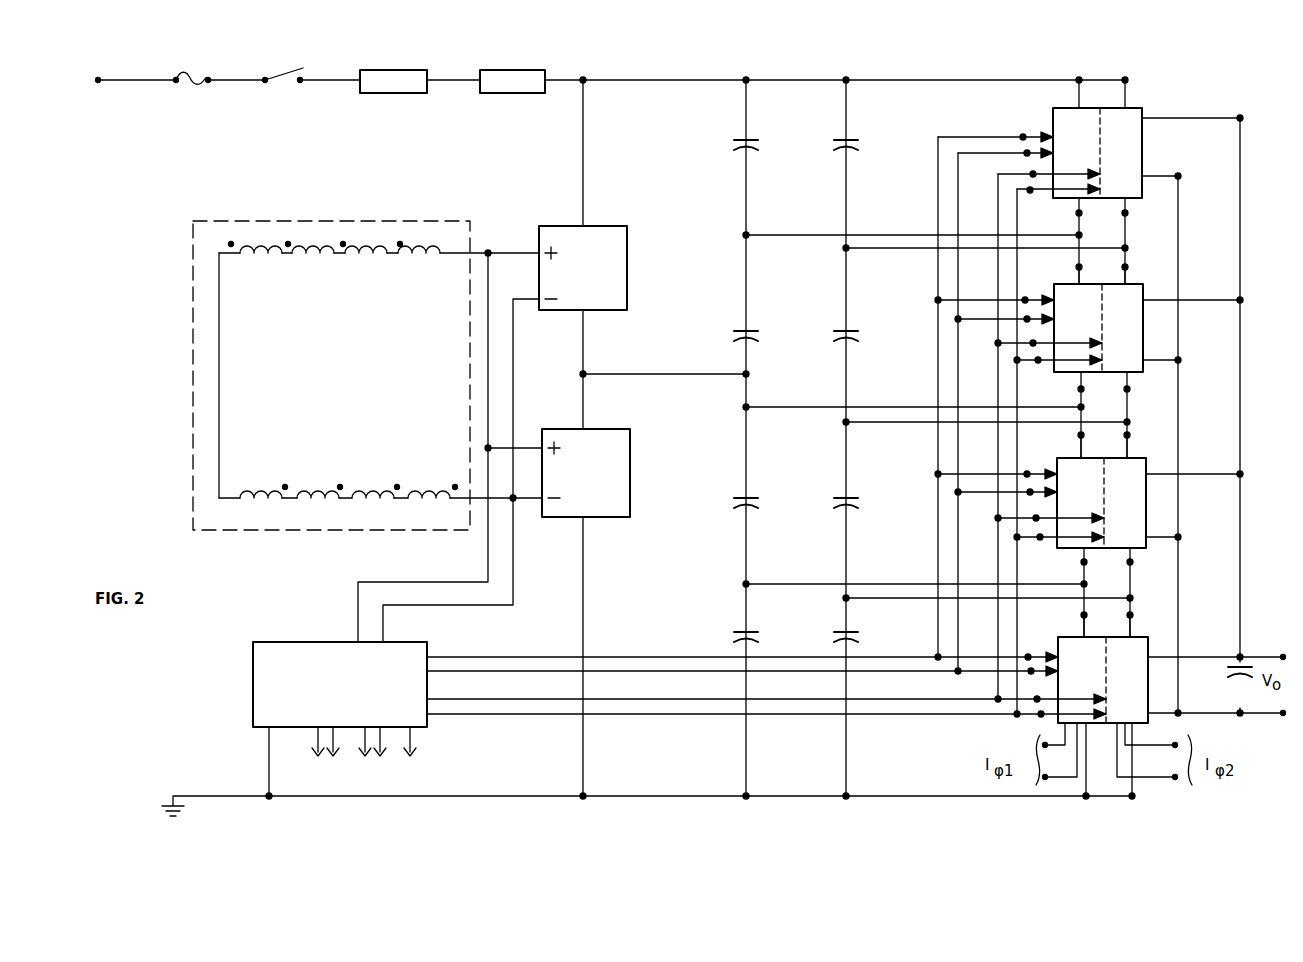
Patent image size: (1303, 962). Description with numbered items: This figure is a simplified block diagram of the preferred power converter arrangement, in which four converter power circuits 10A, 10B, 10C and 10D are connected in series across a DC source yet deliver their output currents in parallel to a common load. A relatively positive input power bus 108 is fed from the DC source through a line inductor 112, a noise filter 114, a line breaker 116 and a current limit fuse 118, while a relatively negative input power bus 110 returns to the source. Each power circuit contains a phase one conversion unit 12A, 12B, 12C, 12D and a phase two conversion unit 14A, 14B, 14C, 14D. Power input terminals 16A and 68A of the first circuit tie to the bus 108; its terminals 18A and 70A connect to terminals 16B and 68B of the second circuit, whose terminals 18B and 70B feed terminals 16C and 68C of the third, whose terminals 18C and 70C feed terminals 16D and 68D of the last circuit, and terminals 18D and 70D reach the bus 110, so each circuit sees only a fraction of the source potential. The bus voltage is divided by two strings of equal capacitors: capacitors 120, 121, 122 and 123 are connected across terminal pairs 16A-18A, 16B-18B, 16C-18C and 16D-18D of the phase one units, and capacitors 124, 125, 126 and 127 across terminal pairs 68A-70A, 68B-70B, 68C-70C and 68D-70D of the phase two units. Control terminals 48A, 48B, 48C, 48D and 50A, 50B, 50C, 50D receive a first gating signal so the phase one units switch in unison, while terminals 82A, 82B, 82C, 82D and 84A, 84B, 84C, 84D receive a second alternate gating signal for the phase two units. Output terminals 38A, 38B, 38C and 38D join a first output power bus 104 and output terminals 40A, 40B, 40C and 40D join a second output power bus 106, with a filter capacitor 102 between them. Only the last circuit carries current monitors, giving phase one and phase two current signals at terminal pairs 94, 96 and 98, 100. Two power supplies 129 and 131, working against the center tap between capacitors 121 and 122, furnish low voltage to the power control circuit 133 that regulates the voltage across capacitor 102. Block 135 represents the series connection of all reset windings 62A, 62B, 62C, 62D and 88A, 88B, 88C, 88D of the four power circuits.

The input power bus 108 is at (921, 80).
The input power bus 110 is at (685, 796).
The line inductor 112 is at (524, 72).
The noise filter 114 is at (404, 72).
The line breaker 116 is at (284, 74).
The current limit fuse 118 is at (198, 74).
The capacitor 120 is at (728, 142).
The capacitor 121 is at (726, 330).
The capacitor 122 is at (734, 498).
The capacitor 123 is at (730, 636).
The capacitor 124 is at (828, 142).
The capacitor 125 is at (834, 332).
The capacitor 126 is at (846, 502).
The capacitor 127 is at (838, 638).
The power supply 129 is at (627, 230).
The power supply 131 is at (630, 440).
The power control circuit 133 is at (334, 638).
The reset winding block 135 is at (355, 218).
The reset winding 62A is at (425, 258).
The reset winding 62B is at (368, 258).
The reset winding 62C is at (313, 258).
The reset winding 62D is at (256, 258).
The reset winding 88A is at (260, 484).
The reset winding 88B is at (314, 484).
The reset winding 88C is at (373, 484).
The reset winding 88D is at (428, 484).
The converter power circuit 10A is at (1076, 142).
The converter power circuit 10B is at (1089, 310).
The converter power circuit 10C is at (1090, 485).
The converter power circuit 10D is at (1091, 660).
The phase one conversion unit 12A is at (1074, 129).
The phase one conversion unit 12B is at (1074, 305).
The phase one conversion unit 12C is at (1078, 479).
The phase one conversion unit 12D is at (1079, 657).
The phase two conversion unit 14A is at (1120, 129).
The phase two conversion unit 14B is at (1121, 305).
The phase two conversion unit 14C is at (1124, 479).
The phase two conversion unit 14D is at (1125, 657).
The power input terminal 16A is at (1078, 73).
The power input terminal 16B is at (1082, 267).
The power input terminal 16C is at (1084, 435).
The power input terminal 16D is at (1087, 615).
The power input terminal 18A is at (1102, 213).
The power input terminal 18B is at (1104, 385).
The power input terminal 18C is at (1107, 558).
The power input terminal 18D is at (1106, 798).
The power input terminal 68A is at (1131, 73).
The power input terminal 68B is at (1128, 267).
The power input terminal 68C is at (1130, 435).
The power input terminal 68D is at (1133, 615).
The power input terminal 70A is at (1156, 211).
The power input terminal 70B is at (1158, 387).
The power input terminal 70C is at (1161, 560).
The power input terminal 70D is at (1133, 800).
The power output terminal 38A is at (1242, 116).
The power output terminal 38B is at (1263, 304).
The power output terminal 38C is at (1243, 474).
The power output terminal 38D is at (1240, 650).
The power output terminal 40A is at (1179, 176).
The power output terminal 40B is at (1209, 358).
The power output terminal 40C is at (1181, 537).
The power output terminal 40D is at (1188, 716).
The control terminal 48A is at (1027, 142).
The control terminal 48B is at (1046, 300).
The control terminal 48C is at (1046, 474).
The control terminal 48D is at (1046, 654).
The control terminal 50A is at (1023, 137).
The control terminal 50B is at (1027, 300).
The control terminal 50C is at (1030, 476).
The control terminal 50D is at (1030, 660).
The control terminal 82A is at (1032, 174).
The control terminal 82B is at (1032, 341).
The control terminal 82C is at (1034, 518).
The control terminal 82D is at (1034, 699).
The control terminal 84A is at (1030, 192).
The control terminal 84B is at (1038, 363).
The control terminal 84C is at (1040, 540).
The control terminal 84D is at (1038, 717).
The output terminal 94 is at (1070, 743).
The output terminal 96 is at (1061, 775).
The output terminal 98 is at (1174, 744).
The output terminal 100 is at (1176, 776).
The filter capacitor 102 is at (1226, 672).
The first output power bus 104 is at (1267, 650).
The second output power bus 106 is at (1284, 716).